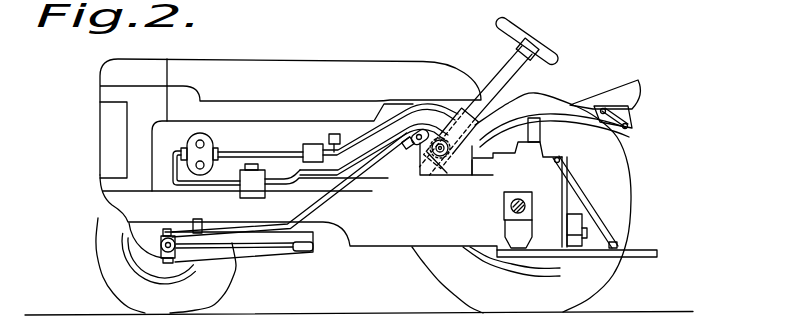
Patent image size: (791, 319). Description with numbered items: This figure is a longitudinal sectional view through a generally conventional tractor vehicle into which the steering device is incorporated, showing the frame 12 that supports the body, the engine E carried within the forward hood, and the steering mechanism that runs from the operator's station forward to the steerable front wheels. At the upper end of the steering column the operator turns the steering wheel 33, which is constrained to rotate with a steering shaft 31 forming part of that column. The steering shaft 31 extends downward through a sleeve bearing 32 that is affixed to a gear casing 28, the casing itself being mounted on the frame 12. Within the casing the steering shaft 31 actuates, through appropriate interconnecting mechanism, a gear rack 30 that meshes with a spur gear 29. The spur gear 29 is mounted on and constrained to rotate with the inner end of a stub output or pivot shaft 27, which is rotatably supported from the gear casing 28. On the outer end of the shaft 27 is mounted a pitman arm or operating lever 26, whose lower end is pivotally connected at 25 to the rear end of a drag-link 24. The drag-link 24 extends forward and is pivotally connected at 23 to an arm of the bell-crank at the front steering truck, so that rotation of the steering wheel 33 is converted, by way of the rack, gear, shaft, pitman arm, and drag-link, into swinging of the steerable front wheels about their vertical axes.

The framework 12 is at (373, 247).
The pivotal connection 23 is at (168, 229).
The drag-link 24 is at (256, 240).
The pivotal connection 25 is at (419, 131).
The pitman arm 26 is at (420, 147).
The stub output shaft 27 is at (425, 157).
The gear casing 28 is at (477, 174).
The spur gear 29 is at (424, 160).
The gear rack 30 is at (448, 170).
The steering shaft 31 is at (506, 66).
The sleeve bearing 32 is at (487, 117).
The steering wheel 33 is at (553, 43).
The engine E is at (178, 130).